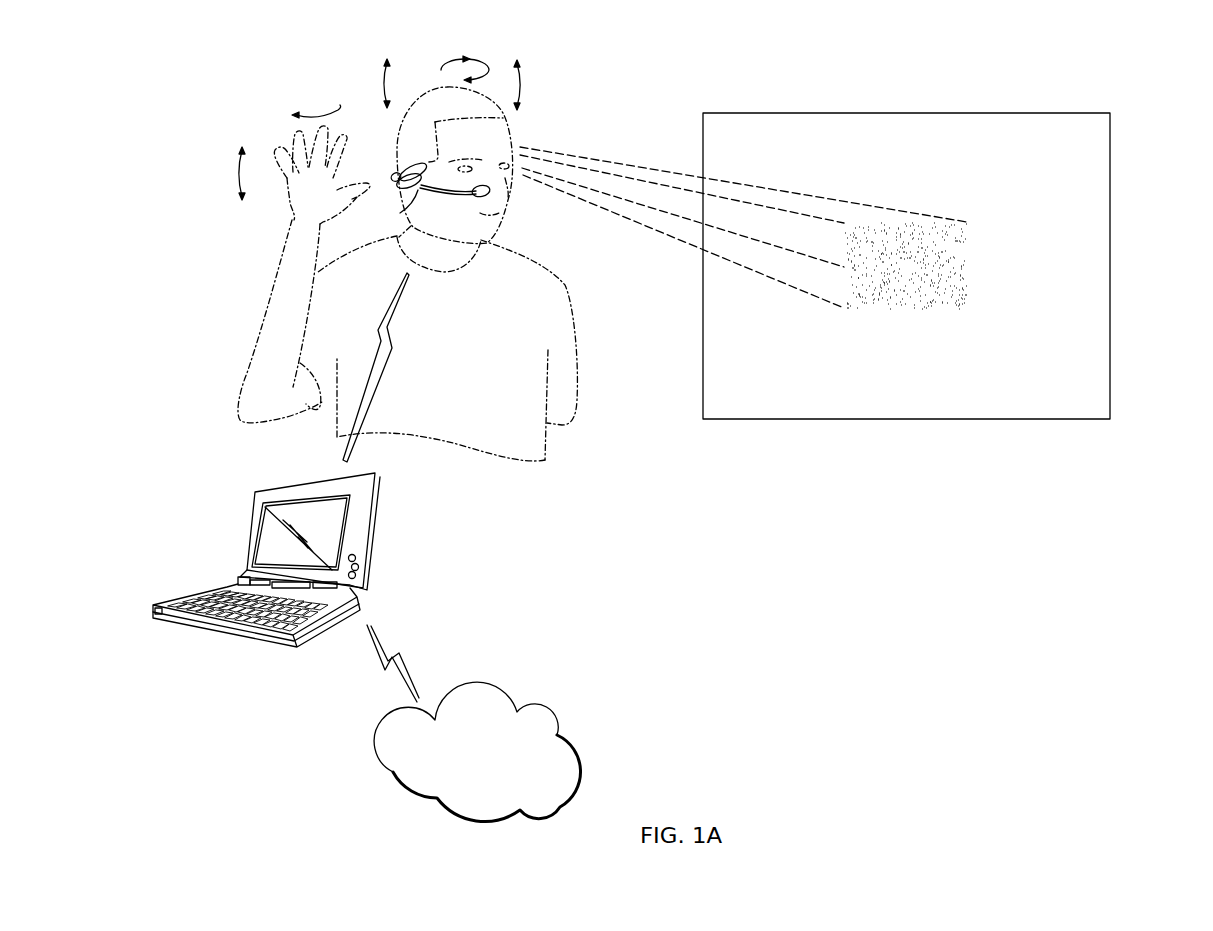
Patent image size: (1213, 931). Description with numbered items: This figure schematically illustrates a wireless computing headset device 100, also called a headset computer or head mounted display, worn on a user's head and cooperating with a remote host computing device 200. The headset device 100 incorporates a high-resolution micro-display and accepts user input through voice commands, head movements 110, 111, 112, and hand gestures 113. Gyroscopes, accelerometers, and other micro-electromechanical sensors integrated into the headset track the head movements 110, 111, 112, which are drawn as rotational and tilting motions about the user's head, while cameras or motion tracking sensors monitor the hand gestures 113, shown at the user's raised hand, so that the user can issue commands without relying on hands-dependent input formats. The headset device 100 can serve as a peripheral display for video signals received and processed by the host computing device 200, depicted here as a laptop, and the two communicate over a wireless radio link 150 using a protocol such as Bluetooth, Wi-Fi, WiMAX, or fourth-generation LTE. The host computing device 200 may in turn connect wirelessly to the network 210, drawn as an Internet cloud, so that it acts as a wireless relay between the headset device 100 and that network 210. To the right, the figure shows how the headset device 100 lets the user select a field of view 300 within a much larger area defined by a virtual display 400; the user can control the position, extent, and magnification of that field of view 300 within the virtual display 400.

The wireless computing headset device 100 is at (401, 213).
The head movement 110 is at (443, 70).
The head movement 111 is at (522, 88).
The head movement 112 is at (383, 83).
The hand gesture 113 is at (238, 177).
The wireless radio link 150 is at (369, 392).
The host computing device 200 is at (373, 527).
The network 210 is at (560, 733).
The field of view 300 is at (968, 263).
The virtual display 400 is at (787, 419).